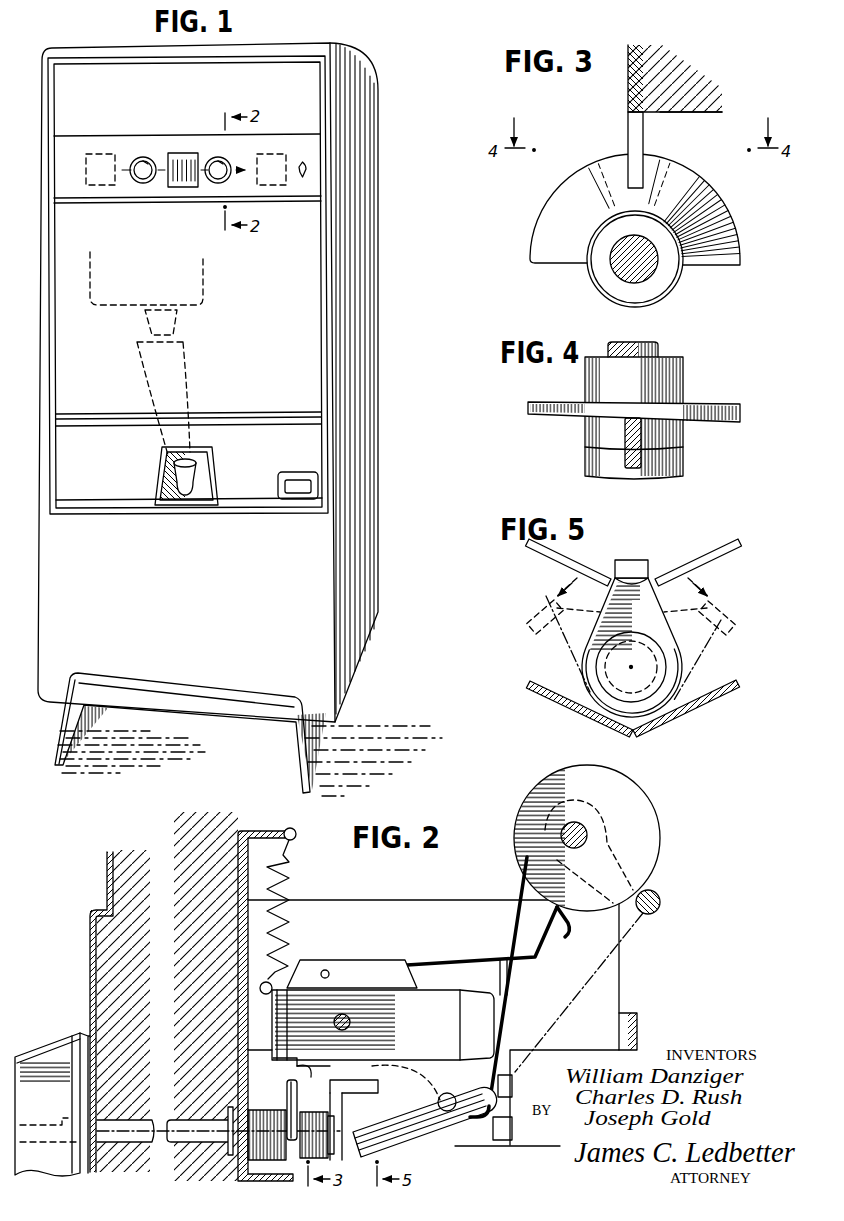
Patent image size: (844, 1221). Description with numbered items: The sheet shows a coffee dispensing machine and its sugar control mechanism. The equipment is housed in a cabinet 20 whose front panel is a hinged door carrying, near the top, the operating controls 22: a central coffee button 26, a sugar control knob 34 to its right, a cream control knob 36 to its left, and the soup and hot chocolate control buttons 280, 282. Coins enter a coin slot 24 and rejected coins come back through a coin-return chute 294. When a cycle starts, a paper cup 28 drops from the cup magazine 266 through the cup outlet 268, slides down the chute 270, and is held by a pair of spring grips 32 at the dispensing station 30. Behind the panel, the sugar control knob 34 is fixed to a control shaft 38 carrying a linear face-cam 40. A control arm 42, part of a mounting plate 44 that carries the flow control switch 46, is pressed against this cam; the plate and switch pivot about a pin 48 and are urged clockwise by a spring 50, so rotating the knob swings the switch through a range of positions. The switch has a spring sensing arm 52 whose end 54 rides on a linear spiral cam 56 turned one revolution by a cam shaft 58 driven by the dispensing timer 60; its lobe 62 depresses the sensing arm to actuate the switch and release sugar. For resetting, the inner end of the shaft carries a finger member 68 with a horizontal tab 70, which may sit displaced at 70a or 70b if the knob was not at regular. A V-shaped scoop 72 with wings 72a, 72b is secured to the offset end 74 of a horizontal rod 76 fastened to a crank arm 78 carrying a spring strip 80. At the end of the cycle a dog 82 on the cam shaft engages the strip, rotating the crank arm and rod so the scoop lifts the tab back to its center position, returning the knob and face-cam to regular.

In FIG. 1, the cabinet 20 is at (386, 329).
In FIG. 1, the operating controls 22 is at (70, 174).
In FIG. 1, the coin slot 24 is at (305, 179).
In FIG. 1, the coffee button 26 is at (178, 159).
In FIG. 1, the paper cup 28 is at (197, 490).
In FIG. 1, the dispensing station 30 is at (167, 498).
In FIG. 1, the spring grips 32 is at (170, 470).
In FIG. 1, the sugar control knob 34 is at (216, 178).
In FIG. 2, the sugar control knob 34 is at (50, 1083).
In FIG. 1, the cream control knob 36 is at (141, 178).
In FIG. 3, the control shaft 38 is at (640, 259).
In FIG. 4, the control shaft 38 is at (650, 346).
In FIG. 5, the control shaft 38 is at (634, 665).
In FIG. 2, the control shaft 38 is at (182, 1128).
In FIG. 3, the linear face-cam 40 is at (558, 211).
In FIG. 4, the linear face-cam 40 is at (576, 414).
In FIG. 2, the linear face-cam 40 is at (288, 1100).
In FIG. 3, the control arm 42 is at (636, 142).
In FIG. 4, the control arm 42 is at (630, 460).
In FIG. 2, the control arm 42 is at (300, 1070).
In FIG. 3, the mounting plate 44 is at (628, 89).
In FIG. 2, the mounting plate 44 is at (300, 1010).
In FIG. 3, the flow control switch 46 is at (684, 103).
In FIG. 2, the flow control switch 46 is at (356, 972).
In FIG. 2, the pin 48 is at (350, 1022).
In FIG. 2, the spring 50 is at (285, 893).
In FIG. 2, the spring sensing arm 52 is at (467, 960).
In FIG. 2, the end 54 is at (566, 925).
In FIG. 2, the linear spiral cam 56 is at (528, 823).
In FIG. 2, the cam shaft 58 is at (588, 835).
In FIG. 2, the dispensing timer 60 is at (648, 988).
In FIG. 2, the lobe 62 is at (660, 857).
In FIG. 5, the finger member 68 is at (613, 612).
In FIG. 2, the finger member 68 is at (337, 1102).
In FIG. 5, the horizontal tab 70 is at (629, 560).
In FIG. 2, the horizontal tab 70 is at (346, 1080).
In FIG. 5, the tab position 70a is at (533, 612).
In FIG. 5, the tab position 70b is at (729, 612).
In FIG. 5, the V-shaped scoop 72 is at (724, 540).
In FIG. 2, the V-shaped scoop 72 is at (394, 1080).
In FIG. 5, the scoop wing 72a is at (548, 692).
In FIG. 5, the scoop wing 72b is at (722, 693).
In FIG. 2, the offset end 74 is at (447, 1114).
In FIG. 2, the horizontal rod 76 is at (485, 1125).
In FIG. 2, the crank arm 78 is at (512, 1018).
In FIG. 2, the spring strip 80 is at (515, 915).
In FIG. 2, the dog 82 is at (661, 900).
In FIG. 1, the cup magazine 266 is at (86, 270).
In FIG. 1, the cup outlet 268 is at (170, 327).
In FIG. 1, the chute 270 is at (184, 402).
In FIG. 1, the soup control button 280 is at (101, 159).
In FIG. 1, the hot chocolate control button 282 is at (276, 159).
In FIG. 1, the coin-return chute 294 is at (298, 500).